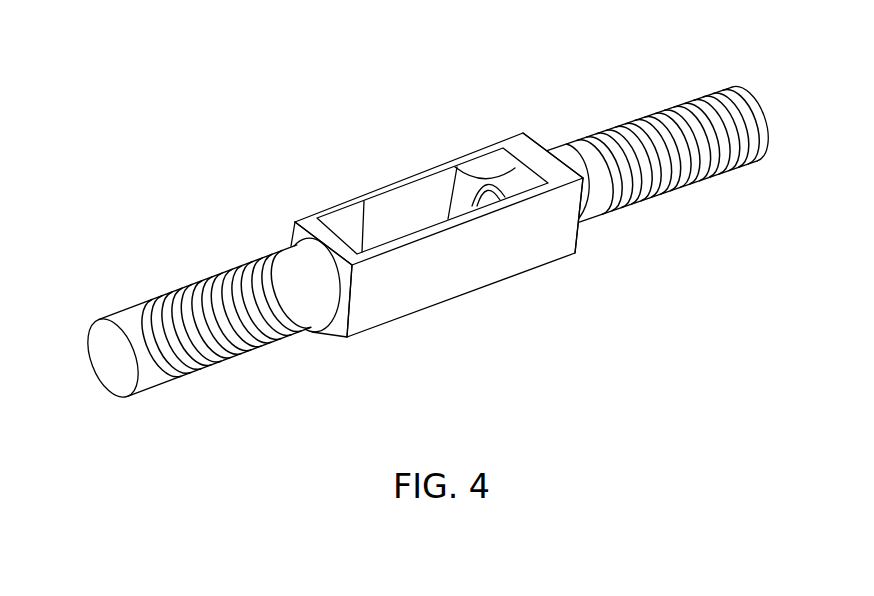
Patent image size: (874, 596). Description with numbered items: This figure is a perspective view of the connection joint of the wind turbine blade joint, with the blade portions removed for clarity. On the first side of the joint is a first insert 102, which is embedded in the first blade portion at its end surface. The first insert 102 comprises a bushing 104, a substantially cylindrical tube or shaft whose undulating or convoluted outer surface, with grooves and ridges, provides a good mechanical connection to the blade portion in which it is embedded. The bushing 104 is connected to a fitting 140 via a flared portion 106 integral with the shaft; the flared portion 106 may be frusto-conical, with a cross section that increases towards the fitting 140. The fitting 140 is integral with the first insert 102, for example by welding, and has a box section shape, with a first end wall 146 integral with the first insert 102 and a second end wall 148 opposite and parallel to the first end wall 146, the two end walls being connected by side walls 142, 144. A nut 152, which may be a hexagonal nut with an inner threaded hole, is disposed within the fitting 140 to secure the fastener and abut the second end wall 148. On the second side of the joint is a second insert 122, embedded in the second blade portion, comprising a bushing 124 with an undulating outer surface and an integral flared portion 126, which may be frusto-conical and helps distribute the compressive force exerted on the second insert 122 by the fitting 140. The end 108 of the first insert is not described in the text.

The first insert 102 is at (212, 361).
The bushing 104 is at (234, 357).
The flared portion 106 is at (320, 325).
The end of first threaded member 108 is at (146, 304).
The second insert 122 is at (674, 128).
The bushing 124 is at (665, 193).
The flared portion 126 is at (558, 147).
The fitting 140 is at (411, 238).
The side wall 142 is at (474, 292).
The side wall 144 is at (343, 196).
The first end wall 146 is at (292, 229).
The second end wall 148 is at (524, 147).
The nut 152 is at (457, 166).